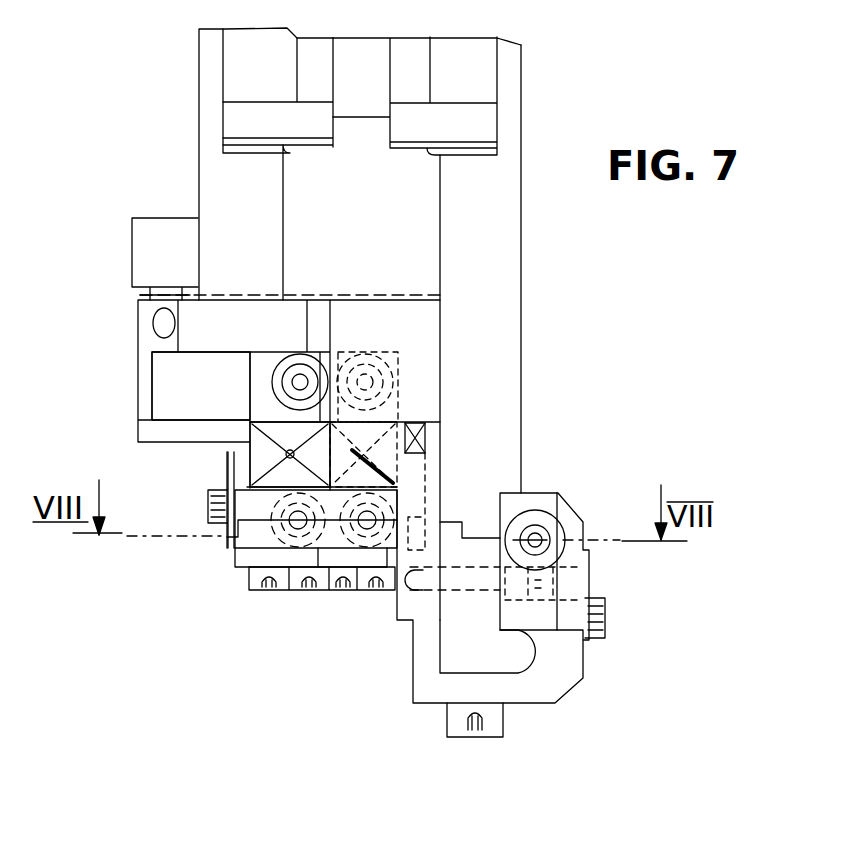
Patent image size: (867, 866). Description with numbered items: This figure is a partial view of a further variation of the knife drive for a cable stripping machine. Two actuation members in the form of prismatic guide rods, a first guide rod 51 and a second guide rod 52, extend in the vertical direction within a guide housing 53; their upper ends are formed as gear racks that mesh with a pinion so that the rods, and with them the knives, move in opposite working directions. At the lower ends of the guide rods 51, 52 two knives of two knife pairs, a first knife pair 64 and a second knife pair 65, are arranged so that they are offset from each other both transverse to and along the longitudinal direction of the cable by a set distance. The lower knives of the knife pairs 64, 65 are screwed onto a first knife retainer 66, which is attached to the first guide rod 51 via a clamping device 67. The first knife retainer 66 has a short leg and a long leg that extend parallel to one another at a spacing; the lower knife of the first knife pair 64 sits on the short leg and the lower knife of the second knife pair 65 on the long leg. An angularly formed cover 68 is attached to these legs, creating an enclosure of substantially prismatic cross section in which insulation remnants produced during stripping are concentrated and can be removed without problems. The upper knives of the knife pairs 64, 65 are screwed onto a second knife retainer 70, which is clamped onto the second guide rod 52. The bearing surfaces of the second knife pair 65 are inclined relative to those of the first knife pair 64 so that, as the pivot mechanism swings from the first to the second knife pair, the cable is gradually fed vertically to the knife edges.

The first guide rod 51 is at (513, 182).
The second guide rod 52 is at (207, 130).
The guide housing 53 is at (487, 71).
The first knife pair 64 is at (405, 443).
The second knife pair 65 is at (252, 462).
The first knife retainer 66 is at (257, 537).
The clamping device 67 is at (567, 668).
The angularly formed cover 68 is at (227, 538).
The second knife retainer 70 is at (163, 383).